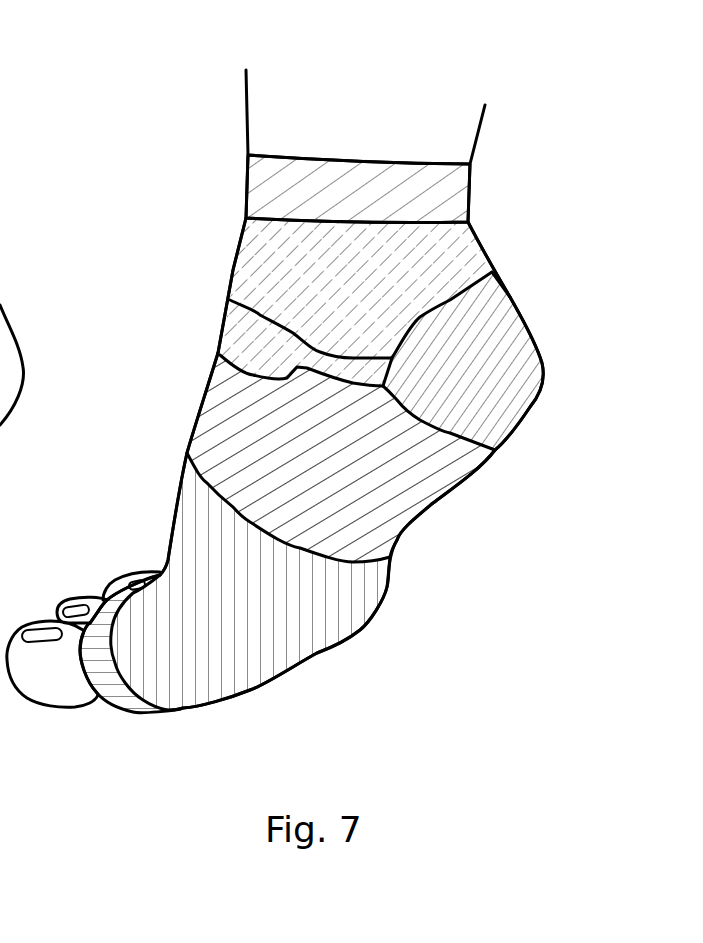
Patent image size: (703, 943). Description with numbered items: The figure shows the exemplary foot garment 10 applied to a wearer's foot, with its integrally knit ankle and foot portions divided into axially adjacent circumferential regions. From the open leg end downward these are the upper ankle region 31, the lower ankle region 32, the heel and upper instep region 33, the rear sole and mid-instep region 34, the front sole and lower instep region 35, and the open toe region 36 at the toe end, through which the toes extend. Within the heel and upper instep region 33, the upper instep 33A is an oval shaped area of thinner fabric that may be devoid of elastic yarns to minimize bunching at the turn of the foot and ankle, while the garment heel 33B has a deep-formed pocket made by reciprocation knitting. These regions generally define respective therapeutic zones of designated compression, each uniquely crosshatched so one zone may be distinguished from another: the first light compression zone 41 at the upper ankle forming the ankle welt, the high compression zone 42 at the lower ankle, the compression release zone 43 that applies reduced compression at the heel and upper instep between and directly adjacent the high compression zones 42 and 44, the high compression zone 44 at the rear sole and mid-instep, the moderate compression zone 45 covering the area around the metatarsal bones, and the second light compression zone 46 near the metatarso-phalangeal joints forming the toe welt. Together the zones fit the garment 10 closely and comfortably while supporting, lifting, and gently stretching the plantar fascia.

The foot garment 10 is at (592, 174).
The upper ankle region 31 is at (260, 193).
The lower ankle region 32 is at (260, 262).
The heel and upper instep region 33 is at (480, 307).
The upper instep 33A is at (260, 327).
The garment heel 33B is at (492, 407).
The rear sole and mid-instep region 34 is at (212, 433).
The front sole and lower instep region 35 is at (193, 540).
The open toe region 36 is at (107, 622).
The first light compression zone 41 is at (455, 178).
The high compression zone 42 is at (465, 257).
The compression release zone 43 is at (492, 352).
The high compression zone 44 is at (397, 500).
The moderate compression zone 45 is at (323, 622).
The second light compression zone 46 is at (155, 715).